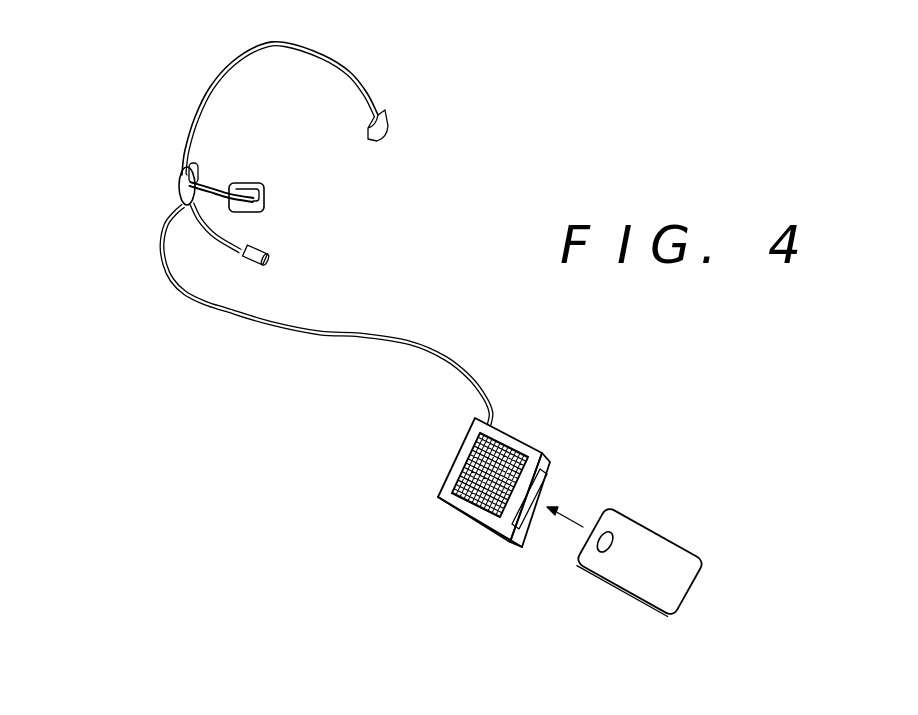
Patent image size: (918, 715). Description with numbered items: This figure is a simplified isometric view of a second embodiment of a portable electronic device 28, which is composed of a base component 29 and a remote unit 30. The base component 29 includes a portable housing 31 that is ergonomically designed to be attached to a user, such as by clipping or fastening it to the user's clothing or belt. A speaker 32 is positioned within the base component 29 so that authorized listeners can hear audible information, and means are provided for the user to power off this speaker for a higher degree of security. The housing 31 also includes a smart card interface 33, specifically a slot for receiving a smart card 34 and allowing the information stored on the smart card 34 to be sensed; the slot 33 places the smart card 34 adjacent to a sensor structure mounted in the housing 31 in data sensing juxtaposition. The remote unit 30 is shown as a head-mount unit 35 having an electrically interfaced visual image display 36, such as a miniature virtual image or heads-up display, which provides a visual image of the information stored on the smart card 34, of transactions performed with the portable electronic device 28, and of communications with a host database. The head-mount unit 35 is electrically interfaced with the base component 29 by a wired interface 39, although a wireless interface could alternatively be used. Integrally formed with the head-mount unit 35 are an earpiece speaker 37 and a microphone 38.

The portable electronic device 28 is at (704, 337).
The base component 29 is at (567, 593).
The remote unit 30 is at (136, 126).
The portable housing 31 is at (521, 433).
The speaker 32 is at (485, 457).
The smart card interface 33 is at (556, 472).
The smart card 34 is at (648, 543).
The head-mount unit 35 is at (365, 88).
The visual image display 36 is at (264, 210).
The earpiece speaker 37 is at (178, 189).
The microphone 38 is at (243, 257).
The wired interface 39 is at (180, 292).